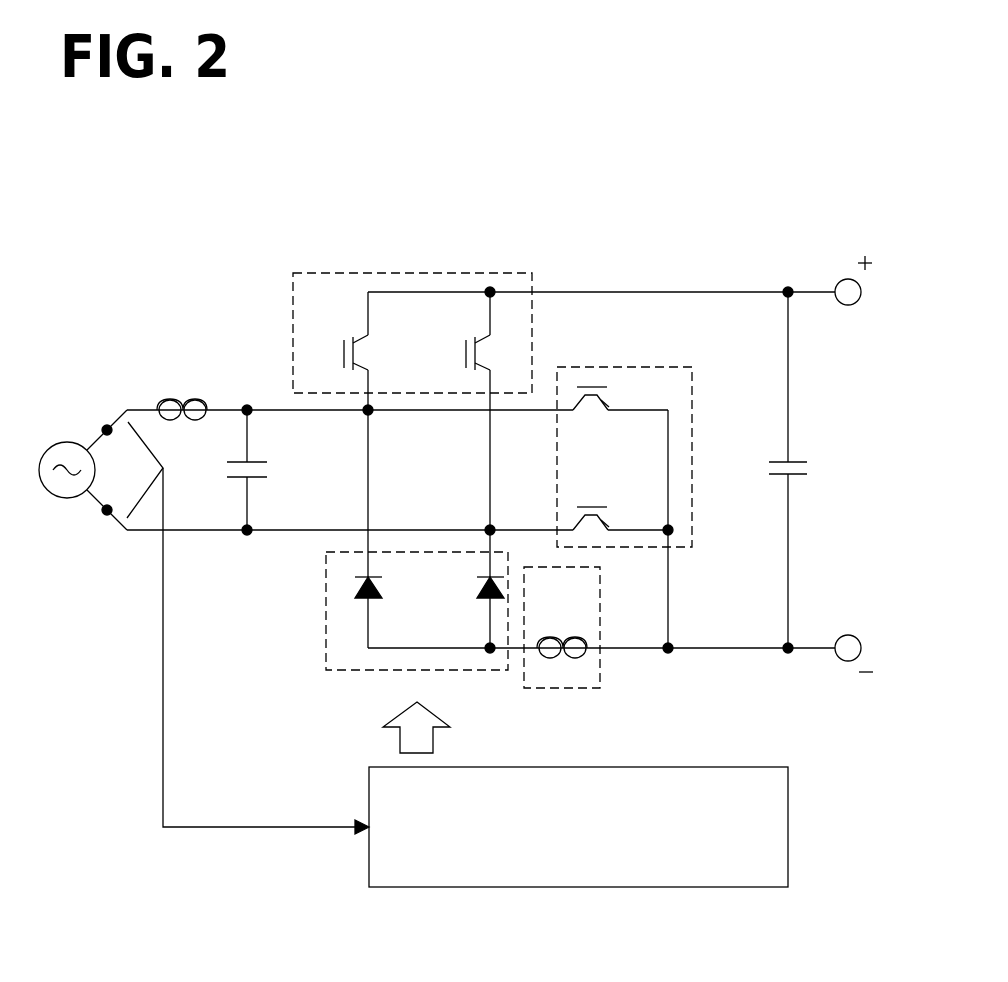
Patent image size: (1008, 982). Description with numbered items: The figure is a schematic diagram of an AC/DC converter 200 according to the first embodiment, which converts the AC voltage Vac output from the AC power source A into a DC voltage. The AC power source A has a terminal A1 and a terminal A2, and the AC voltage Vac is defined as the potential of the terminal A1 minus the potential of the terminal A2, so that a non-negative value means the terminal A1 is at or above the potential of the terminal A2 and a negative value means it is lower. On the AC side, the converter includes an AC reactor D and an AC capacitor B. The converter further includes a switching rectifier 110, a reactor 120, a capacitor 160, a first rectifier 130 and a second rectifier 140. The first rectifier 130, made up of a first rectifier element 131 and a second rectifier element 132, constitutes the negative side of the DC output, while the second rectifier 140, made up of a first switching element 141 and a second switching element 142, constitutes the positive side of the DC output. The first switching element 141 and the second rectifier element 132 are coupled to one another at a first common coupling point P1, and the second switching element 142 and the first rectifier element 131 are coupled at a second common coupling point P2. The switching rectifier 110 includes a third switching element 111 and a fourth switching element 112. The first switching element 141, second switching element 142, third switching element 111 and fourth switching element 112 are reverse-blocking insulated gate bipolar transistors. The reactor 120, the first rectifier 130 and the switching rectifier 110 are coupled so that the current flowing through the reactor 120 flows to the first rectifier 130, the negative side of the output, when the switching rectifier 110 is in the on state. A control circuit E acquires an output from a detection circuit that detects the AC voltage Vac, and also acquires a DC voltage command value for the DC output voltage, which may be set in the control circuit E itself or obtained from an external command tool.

The AC/DC converter 200 is at (425, 957).
The switching rectifier 110 is at (648, 367).
The third switching element 111 is at (613, 392).
The fourth switching element 112 is at (613, 512).
The reactor 120 is at (600, 593).
The first rectifier 130 is at (325, 612).
The first rectifier element 131 is at (474, 605).
The second rectifier element 132 is at (384, 605).
The second rectifier 140 is at (368, 272).
The first switching element 141 is at (339, 331).
The second switching element 142 is at (458, 331).
The capacitor 160 is at (814, 470).
The AC power source A is at (73, 458).
The terminal A1 is at (106, 424).
The terminal A2 is at (105, 516).
The AC capacitor B is at (261, 470).
The AC reactor D is at (182, 392).
The first common coupling point P1 is at (371, 414).
The second common coupling point P2 is at (487, 525).
The control circuit E is at (593, 794).
The AC voltage Vac is at (248, 646).